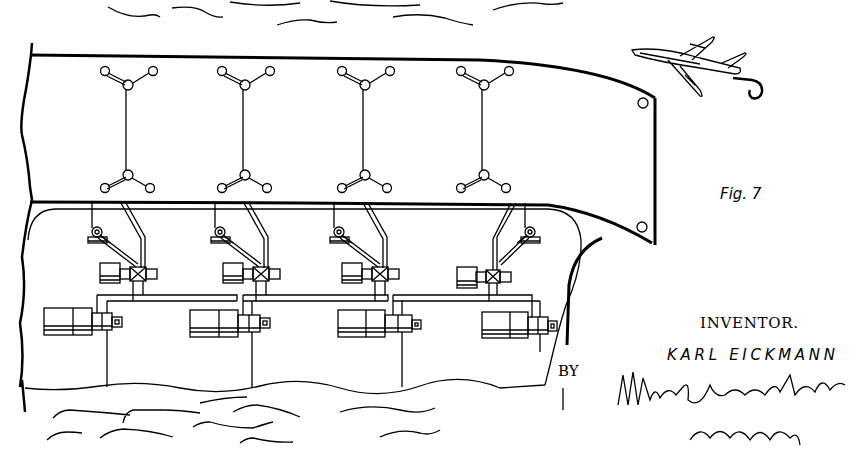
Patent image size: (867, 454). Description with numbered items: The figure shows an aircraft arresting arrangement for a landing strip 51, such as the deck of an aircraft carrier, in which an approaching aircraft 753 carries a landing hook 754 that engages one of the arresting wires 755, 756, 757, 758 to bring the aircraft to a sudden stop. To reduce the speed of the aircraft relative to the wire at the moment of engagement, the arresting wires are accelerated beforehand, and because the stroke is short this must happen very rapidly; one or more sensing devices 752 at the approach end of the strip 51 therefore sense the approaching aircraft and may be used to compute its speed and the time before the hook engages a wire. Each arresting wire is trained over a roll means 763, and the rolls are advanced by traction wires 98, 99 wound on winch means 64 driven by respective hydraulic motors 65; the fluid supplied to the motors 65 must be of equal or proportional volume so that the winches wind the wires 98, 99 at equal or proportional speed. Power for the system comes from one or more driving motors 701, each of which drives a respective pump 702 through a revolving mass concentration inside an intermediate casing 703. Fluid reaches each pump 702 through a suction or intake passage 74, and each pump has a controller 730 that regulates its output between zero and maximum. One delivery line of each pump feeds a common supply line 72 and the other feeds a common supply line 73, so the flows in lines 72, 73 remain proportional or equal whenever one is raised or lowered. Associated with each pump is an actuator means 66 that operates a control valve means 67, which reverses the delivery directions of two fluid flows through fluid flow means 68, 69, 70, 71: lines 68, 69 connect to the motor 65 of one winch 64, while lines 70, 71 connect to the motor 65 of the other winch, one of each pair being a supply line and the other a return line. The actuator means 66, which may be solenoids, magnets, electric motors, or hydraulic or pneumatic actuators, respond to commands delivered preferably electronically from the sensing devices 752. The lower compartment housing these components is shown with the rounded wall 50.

The strip 51 is at (57, 66).
The housing 50 is at (602, 240).
The sensing device 752 is at (655, 107).
The aircraft 753 is at (647, 52).
The landing hook 754 is at (757, 103).
The arresting wire 755 is at (486, 126).
The arresting wire 756 is at (366, 126).
The arresting wire 757 is at (245, 125).
The arresting wire 758 is at (128, 128).
The roll means 763 is at (134, 87).
The traction wire 99 is at (113, 84).
The traction wire 98 is at (115, 176).
The hydraulic motor 65 is at (92, 232).
The winch means 64 is at (87, 242).
The fluid flow means 68 is at (117, 249).
The fluid flow means 69 is at (118, 240).
The fluid flow means 70 is at (136, 214).
The fluid flow means 71 is at (146, 238).
The control valve means 67 is at (157, 278).
The actuator means 66 is at (100, 272).
The common supply line 72 is at (148, 296).
The common supply line 73 is at (168, 302).
The suction or intake passage 74 is at (108, 348).
The driving motor 701 is at (52, 315).
The intermediate casing 703 is at (82, 318).
The pump 702 is at (97, 331).
The controller 730 is at (118, 326).